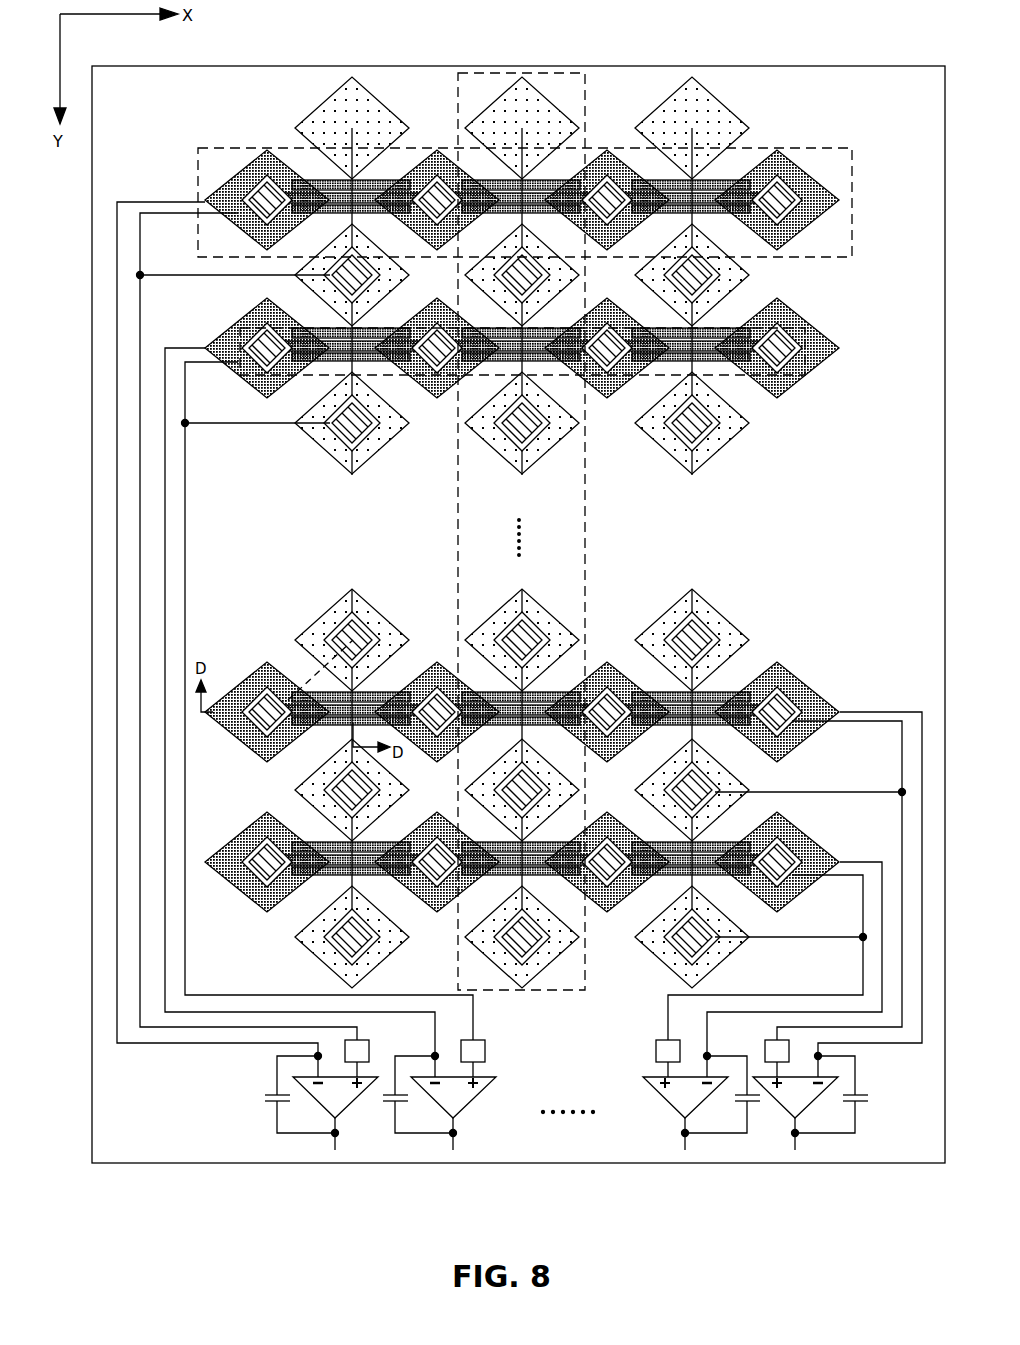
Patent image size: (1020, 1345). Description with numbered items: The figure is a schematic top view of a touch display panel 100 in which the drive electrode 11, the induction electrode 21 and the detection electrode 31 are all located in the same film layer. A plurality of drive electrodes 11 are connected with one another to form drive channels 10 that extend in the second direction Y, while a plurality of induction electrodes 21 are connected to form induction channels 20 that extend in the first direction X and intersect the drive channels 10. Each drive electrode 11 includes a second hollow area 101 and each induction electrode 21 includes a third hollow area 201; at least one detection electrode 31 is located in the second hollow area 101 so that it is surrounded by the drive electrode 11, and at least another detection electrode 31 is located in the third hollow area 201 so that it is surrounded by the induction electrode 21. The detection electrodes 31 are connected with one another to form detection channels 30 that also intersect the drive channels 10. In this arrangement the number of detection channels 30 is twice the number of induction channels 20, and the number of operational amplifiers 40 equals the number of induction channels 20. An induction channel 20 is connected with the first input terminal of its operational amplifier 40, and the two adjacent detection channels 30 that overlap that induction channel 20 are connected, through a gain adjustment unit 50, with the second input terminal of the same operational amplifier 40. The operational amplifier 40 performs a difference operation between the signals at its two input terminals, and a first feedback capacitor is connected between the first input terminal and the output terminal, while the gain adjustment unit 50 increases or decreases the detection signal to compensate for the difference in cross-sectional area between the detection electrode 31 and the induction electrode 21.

The drive channel 10 is at (500, 73).
The drive electrode 11 is at (347, 102).
The second hollow area 101 is at (335, 437).
The induction channel 20 is at (852, 195).
The induction electrode 21 is at (432, 152).
The third hollow area 201 is at (420, 167).
The detection channel 30 is at (840, 350).
The detection electrode 31 is at (263, 150).
The operational amplifier 40 is at (342, 1103).
The gain adjustment unit 50 is at (369, 1050).
The touch display panel 100 is at (927, 1206).